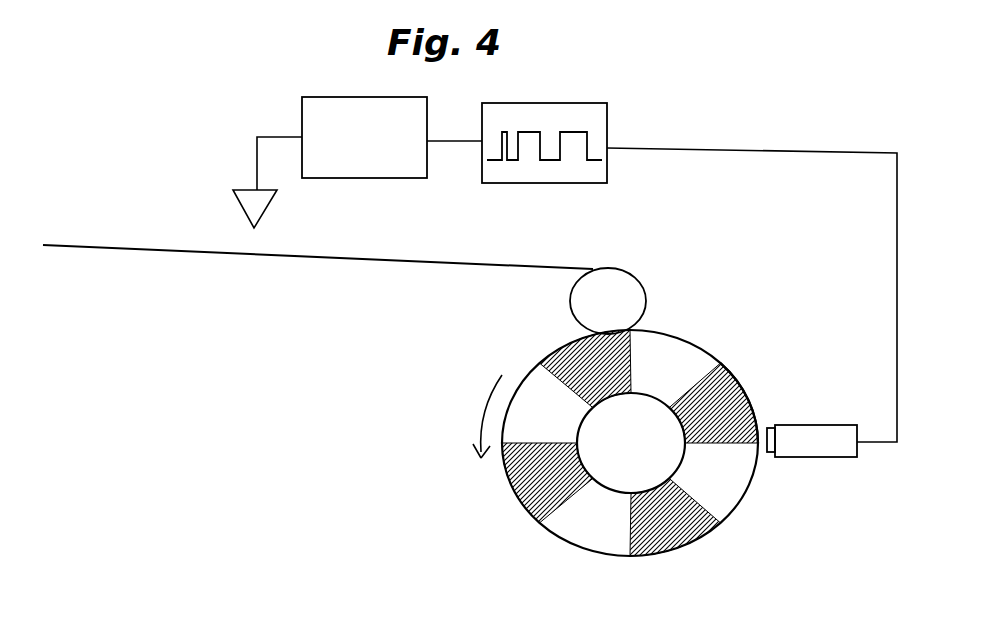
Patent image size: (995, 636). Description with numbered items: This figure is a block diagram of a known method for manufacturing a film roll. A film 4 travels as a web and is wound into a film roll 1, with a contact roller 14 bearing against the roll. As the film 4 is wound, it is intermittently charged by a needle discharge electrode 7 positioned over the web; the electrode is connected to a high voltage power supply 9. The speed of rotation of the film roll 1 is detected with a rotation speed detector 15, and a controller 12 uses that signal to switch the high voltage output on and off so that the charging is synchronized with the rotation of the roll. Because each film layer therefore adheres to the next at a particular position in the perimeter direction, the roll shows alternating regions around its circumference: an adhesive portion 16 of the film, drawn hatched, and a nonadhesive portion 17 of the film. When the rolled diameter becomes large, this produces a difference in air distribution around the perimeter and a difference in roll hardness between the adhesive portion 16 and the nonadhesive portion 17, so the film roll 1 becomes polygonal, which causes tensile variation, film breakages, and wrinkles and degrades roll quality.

The film roll 1 is at (525, 497).
The film 4 is at (200, 253).
The needle discharge electrode 7 is at (252, 203).
The high voltage power supply 9 is at (364, 125).
The controller 12 is at (544, 131).
The contact roller 14 is at (618, 296).
The rotation speed detector for film roll 15 is at (820, 458).
The adhesive portion of the film 16 is at (680, 542).
The nonadhesive portion of the film 17 is at (732, 478).